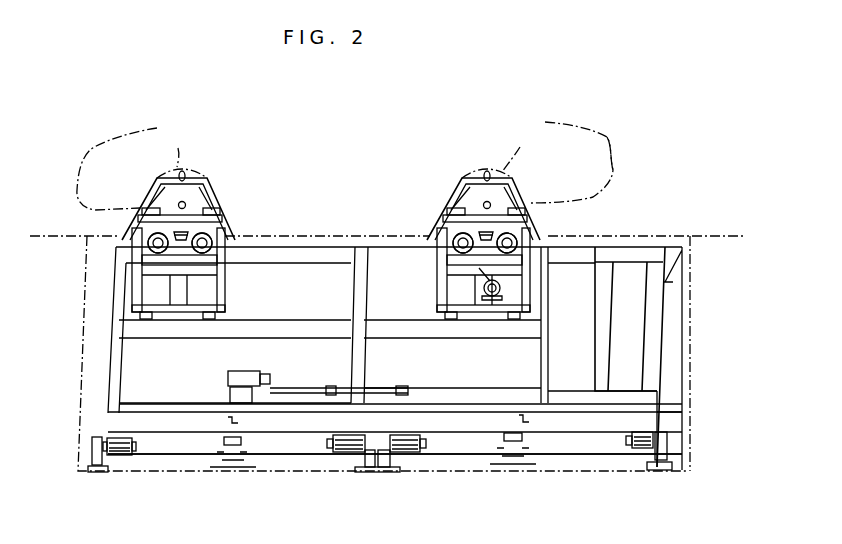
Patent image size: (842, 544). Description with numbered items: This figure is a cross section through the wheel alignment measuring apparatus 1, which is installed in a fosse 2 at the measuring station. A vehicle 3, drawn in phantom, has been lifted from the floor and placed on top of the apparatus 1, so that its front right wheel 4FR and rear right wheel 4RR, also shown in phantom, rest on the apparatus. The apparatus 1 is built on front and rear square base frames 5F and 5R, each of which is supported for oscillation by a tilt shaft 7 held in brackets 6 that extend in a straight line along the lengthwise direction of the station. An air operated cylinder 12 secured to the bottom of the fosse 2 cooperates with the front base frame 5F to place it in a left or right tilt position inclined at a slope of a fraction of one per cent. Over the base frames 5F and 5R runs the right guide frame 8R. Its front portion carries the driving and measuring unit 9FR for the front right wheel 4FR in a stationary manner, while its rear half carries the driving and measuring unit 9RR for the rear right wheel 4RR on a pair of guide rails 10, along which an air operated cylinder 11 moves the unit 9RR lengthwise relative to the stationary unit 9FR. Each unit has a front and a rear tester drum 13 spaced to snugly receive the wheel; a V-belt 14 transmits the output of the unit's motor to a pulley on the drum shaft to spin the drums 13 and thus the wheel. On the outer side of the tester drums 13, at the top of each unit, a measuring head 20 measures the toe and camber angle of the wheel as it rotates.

The wheel alignment measuring apparatus 1 is at (712, 120).
The fosse 2 is at (688, 362).
The vehicle 3 is at (607, 138).
The front right wheel 4FR is at (171, 141).
The rear right wheel 4RR is at (512, 141).
The front base frame 5F is at (293, 450).
The rear base frame 5R is at (583, 457).
The bracket 6 is at (680, 459).
The tilt shaft 7 is at (668, 439).
The right guide frame 8R is at (657, 417).
The driving and measuring unit for front right wheel 9FR is at (230, 187).
The driving and measuring unit for rear right wheel 9RR is at (527, 187).
The guide rail 10 is at (572, 404).
The air operated cylinder 11 is at (303, 388).
The air operated cylinder 12 is at (227, 437).
The tester drum 13 is at (137, 226).
The V-belt 14 is at (477, 279).
The measuring head 20 is at (200, 177).